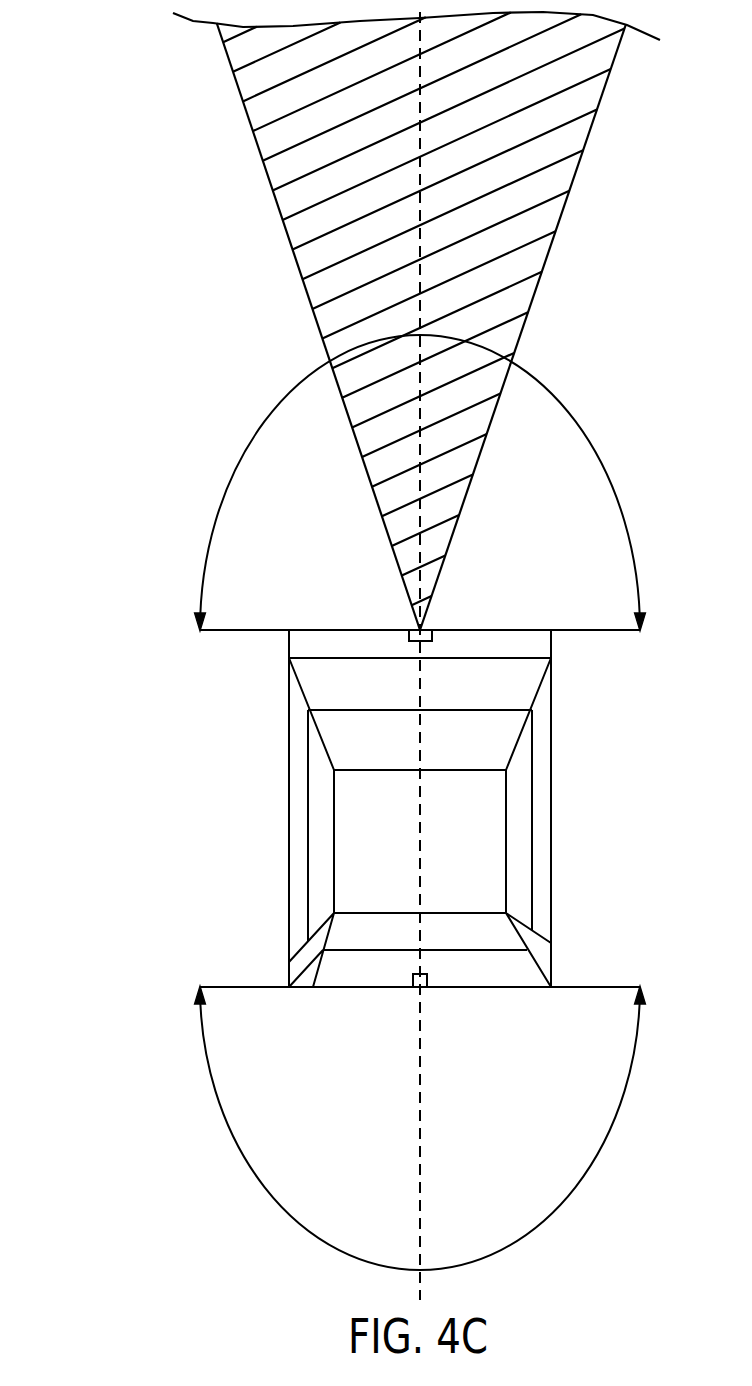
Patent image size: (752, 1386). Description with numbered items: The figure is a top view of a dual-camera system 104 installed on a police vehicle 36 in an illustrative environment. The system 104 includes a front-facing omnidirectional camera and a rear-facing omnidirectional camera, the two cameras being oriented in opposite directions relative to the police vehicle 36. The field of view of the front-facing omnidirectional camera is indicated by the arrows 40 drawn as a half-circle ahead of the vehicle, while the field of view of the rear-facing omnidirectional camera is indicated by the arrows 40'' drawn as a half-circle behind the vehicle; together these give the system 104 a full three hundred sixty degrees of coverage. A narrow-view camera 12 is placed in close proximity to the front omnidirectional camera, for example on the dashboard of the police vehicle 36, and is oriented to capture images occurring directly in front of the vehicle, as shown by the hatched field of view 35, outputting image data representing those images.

The system 104 is at (138, 73).
The field of view 35 is at (541, 223).
The arrows 40 is at (411, 483).
The narrow-view camera 12 is at (410, 631).
The police vehicle 36 is at (523, 788).
The arrows 40'' is at (399, 1128).